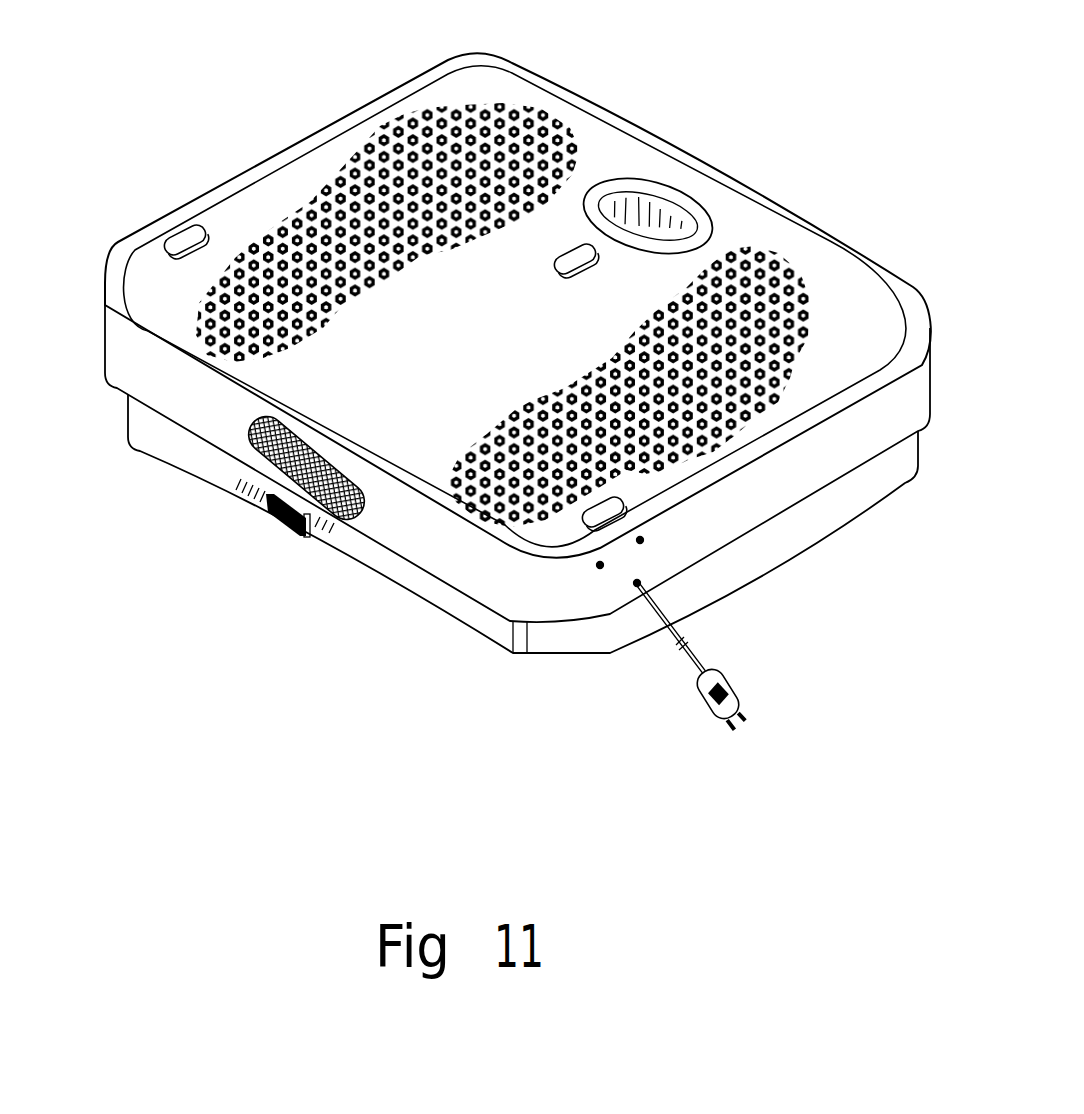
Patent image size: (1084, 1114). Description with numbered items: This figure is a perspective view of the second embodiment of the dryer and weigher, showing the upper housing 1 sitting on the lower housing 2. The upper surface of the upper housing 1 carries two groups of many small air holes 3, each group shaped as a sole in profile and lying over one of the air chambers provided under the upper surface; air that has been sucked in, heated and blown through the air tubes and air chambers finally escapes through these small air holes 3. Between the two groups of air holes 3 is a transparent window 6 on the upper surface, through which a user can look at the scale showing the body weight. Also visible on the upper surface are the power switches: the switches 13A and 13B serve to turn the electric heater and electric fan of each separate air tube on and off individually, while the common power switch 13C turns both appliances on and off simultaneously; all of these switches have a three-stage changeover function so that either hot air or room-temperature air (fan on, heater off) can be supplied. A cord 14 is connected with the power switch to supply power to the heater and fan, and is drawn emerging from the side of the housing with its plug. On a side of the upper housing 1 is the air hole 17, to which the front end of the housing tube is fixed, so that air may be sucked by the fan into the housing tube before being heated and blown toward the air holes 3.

The upper housing 1 is at (872, 257).
The lower casing 2 is at (827, 513).
The small air holes 3 is at (528, 118).
The transparent window 6 is at (643, 200).
The power switch 13A is at (610, 510).
The power switch 13B is at (181, 234).
The common power switch 13C is at (562, 245).
The cord 14 is at (672, 643).
The air hole 17 is at (266, 473).